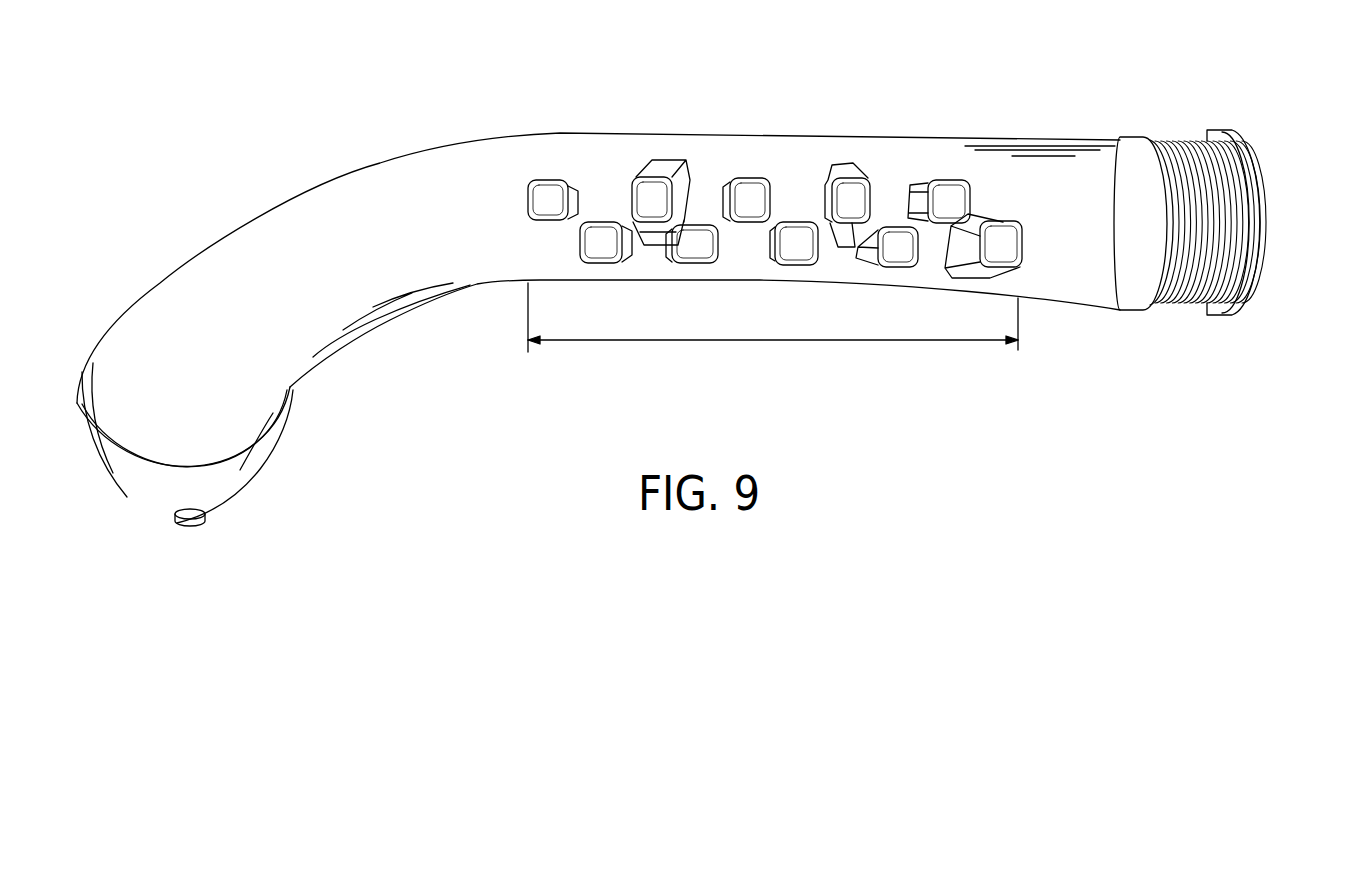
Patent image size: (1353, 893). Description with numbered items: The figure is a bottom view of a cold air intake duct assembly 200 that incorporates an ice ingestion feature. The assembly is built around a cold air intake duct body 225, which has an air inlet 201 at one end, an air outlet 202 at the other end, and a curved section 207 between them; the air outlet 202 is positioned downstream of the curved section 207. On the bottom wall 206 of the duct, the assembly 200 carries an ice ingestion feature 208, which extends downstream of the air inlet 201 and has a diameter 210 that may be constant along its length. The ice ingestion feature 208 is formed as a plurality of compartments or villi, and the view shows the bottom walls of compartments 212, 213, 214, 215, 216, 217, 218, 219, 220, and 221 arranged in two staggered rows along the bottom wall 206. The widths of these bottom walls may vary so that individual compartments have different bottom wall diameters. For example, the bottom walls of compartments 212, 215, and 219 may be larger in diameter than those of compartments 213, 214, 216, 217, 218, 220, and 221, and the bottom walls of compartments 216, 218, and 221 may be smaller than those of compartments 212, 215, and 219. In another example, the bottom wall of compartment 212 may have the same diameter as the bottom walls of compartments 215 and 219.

The cold air intake duct assembly 200 is at (253, 80).
The air inlet 201 is at (1250, 130).
The air outlet 202 is at (340, 413).
The bottom wall 206 is at (462, 250).
The curved section 207 is at (362, 153).
The ice ingestion feature 208 is at (817, 258).
The diameter 210 is at (770, 346).
The compartment 212 is at (1026, 242).
The compartment 213 is at (950, 190).
The compartment 214 is at (902, 257).
The compartment 215 is at (850, 183).
The compartment 216 is at (803, 253).
The compartment 217 is at (747, 190).
The compartment 218 is at (703, 250).
The compartment 219 is at (657, 170).
The compartment 220 is at (600, 250).
The compartment 221 is at (553, 193).
The cold air intake duct body 225 is at (449, 163).